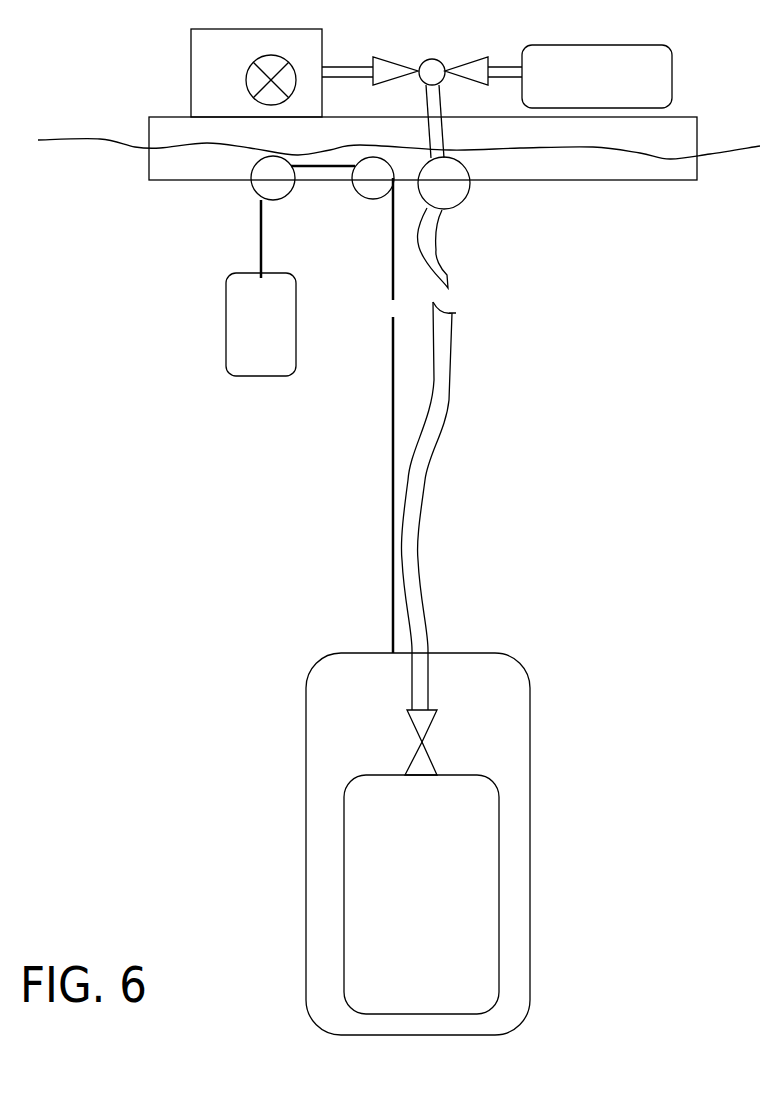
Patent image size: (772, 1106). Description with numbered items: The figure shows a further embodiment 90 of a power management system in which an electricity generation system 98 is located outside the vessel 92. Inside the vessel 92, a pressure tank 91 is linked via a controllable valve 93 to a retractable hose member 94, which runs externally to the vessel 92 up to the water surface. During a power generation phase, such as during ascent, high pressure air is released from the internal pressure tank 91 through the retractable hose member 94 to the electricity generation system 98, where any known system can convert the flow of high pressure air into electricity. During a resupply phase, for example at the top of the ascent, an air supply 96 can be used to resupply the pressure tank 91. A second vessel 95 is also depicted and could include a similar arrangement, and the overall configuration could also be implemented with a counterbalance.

The further embodiment 90 is at (127, 58).
The pressure tank 91 is at (421, 894).
The vessel 92 is at (306, 798).
The controllable valve 93 is at (422, 755).
The retractable hose member 94 is at (417, 569).
The second vessel 95 is at (261, 288).
The air supply 96 is at (597, 76).
The electricity generation system 98 is at (256, 73).